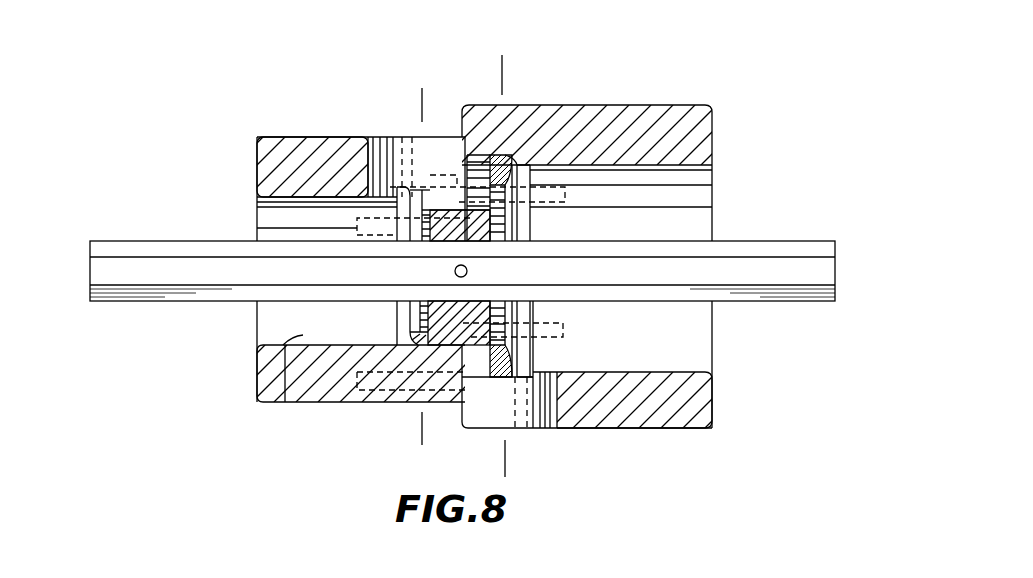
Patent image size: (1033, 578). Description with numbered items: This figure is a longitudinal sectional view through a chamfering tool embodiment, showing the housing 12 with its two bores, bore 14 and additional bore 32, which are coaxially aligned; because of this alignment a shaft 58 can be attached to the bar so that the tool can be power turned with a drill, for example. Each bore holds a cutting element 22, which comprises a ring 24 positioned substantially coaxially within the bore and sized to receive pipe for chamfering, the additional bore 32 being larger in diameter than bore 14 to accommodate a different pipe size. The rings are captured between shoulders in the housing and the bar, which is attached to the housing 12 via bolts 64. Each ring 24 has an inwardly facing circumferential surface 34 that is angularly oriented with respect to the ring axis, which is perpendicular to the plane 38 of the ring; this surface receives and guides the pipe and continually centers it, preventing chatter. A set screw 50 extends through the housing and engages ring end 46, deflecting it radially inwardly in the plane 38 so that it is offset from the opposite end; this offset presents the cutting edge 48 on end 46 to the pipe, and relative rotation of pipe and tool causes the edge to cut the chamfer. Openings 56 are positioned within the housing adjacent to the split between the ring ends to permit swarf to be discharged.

The shaft 58 is at (115, 240).
The housing 12 is at (690, 422).
The bore 14 is at (283, 402).
The additional bore 32 is at (636, 368).
The opening 56 is at (400, 137).
The set screw 50 is at (405, 137).
The plane of ring 38 is at (422, 88).
The inwardly facing circumferential surface 34 is at (525, 212).
The cutting element 22 is at (503, 150).
The ring 24 is at (525, 162).
The ring end 46 is at (417, 200).
The cutting edge 48 is at (413, 204).
The bolt 64 is at (396, 400).